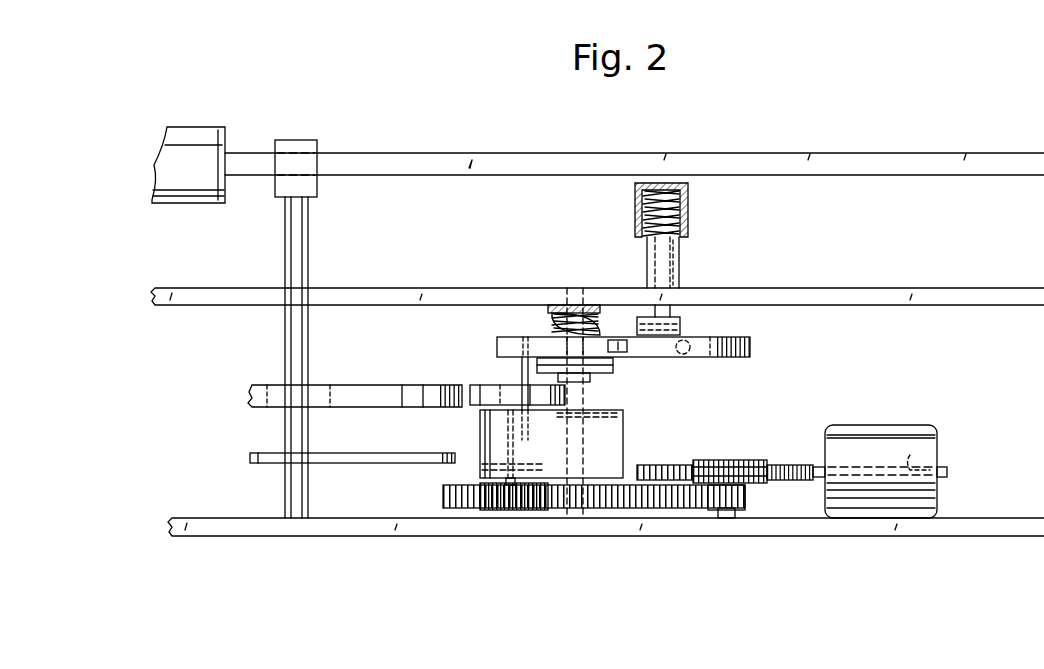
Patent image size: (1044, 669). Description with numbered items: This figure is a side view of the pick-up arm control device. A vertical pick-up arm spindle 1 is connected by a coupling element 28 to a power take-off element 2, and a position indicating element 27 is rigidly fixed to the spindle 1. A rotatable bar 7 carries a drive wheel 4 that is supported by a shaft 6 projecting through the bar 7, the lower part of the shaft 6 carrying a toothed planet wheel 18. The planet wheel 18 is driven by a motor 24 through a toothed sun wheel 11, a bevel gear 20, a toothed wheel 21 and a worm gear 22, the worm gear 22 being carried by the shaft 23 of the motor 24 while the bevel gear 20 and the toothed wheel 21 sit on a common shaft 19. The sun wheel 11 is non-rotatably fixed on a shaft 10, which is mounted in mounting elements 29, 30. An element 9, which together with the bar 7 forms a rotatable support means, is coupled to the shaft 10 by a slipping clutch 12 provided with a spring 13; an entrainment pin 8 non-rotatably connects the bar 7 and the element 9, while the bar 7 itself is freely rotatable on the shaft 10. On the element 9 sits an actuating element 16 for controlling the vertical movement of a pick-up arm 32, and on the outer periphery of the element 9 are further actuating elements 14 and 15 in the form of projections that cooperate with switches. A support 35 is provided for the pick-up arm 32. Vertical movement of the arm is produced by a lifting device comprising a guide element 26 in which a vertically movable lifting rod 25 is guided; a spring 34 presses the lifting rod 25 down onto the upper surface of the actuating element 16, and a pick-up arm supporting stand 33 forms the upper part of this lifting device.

The pick-up arm spindle 1 is at (308, 255).
The power take-off element 2 is at (367, 392).
The drive wheel 4 is at (472, 408).
The shaft 6 is at (490, 512).
The rotatable bar 7 is at (487, 455).
The entrainment pin 8 is at (520, 365).
The element 9 is at (752, 345).
The shaft 10 is at (583, 518).
The sun wheel 11 is at (660, 508).
The slipping clutch 12 is at (592, 380).
The spring 13 is at (548, 322).
The actuating element 14 is at (690, 355).
The actuating element 15 is at (624, 352).
The actuating element 16 is at (682, 325).
The planet wheel 18 is at (520, 512).
The shaft 19 is at (733, 520).
The bevel gear 20 is at (747, 497).
The toothed wheel 21 is at (780, 462).
The worm gear 22 is at (700, 460).
The shaft 23 is at (935, 455).
The motor 24 is at (880, 425).
The lifting rod 25 is at (680, 258).
The guide element 26 is at (647, 255).
The position indicating element 27 is at (250, 460).
The coupling element 28 is at (280, 385).
The mounting element 29 is at (1032, 525).
The mounting element 30 is at (992, 297).
The pick-up arm 32 is at (482, 160).
The pick-up arm supporting stand 33 is at (690, 212).
The spring 34 is at (637, 206).
The support 35 is at (1043, 212).